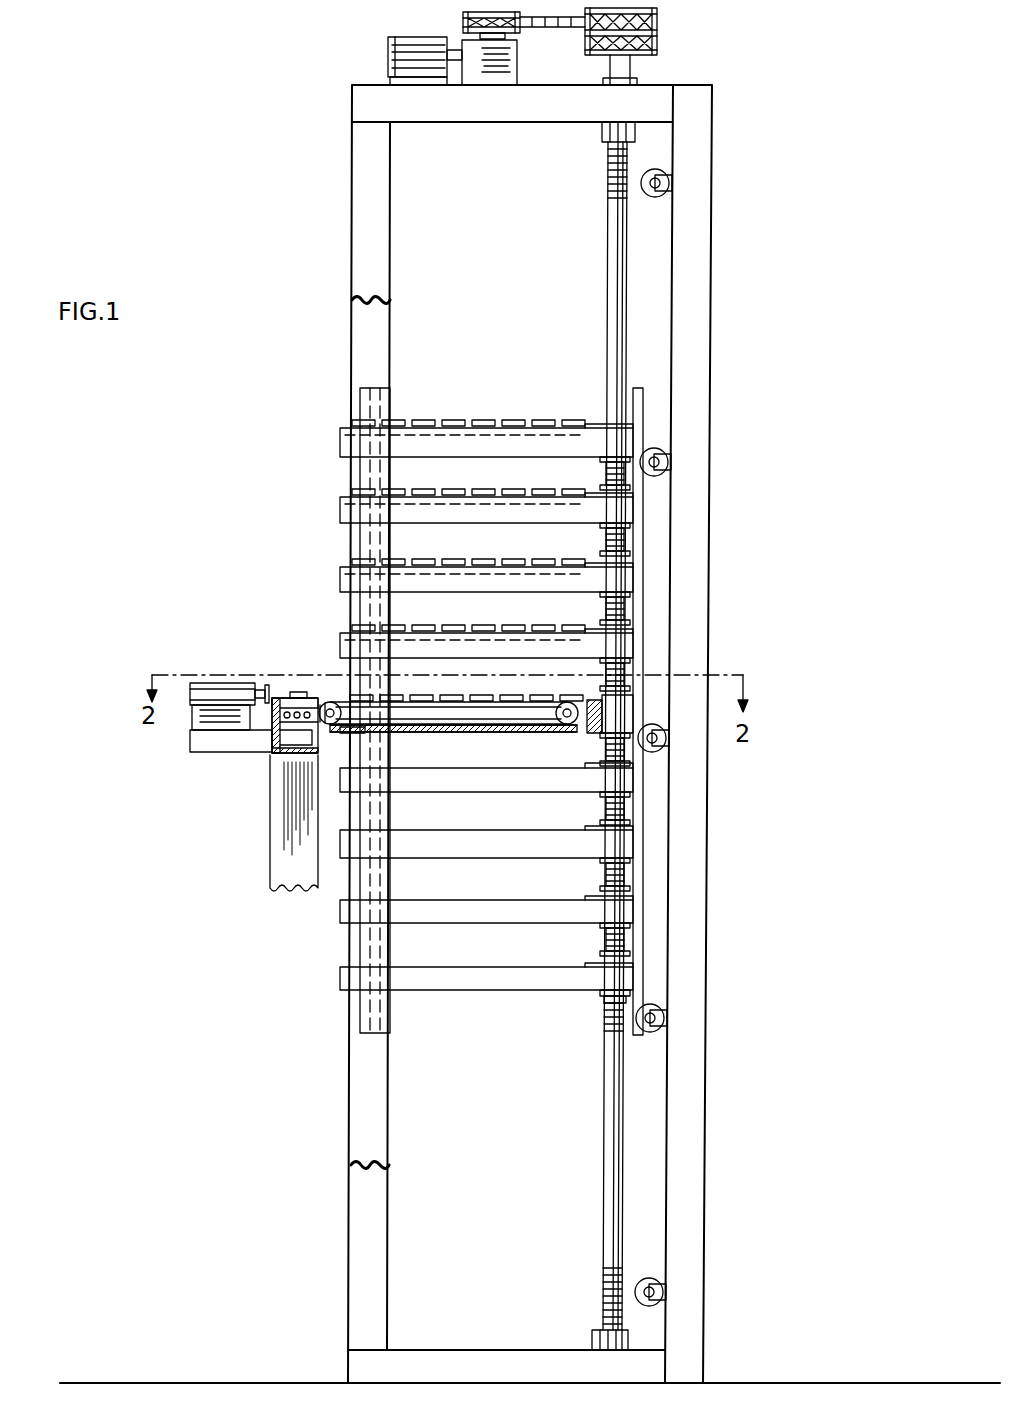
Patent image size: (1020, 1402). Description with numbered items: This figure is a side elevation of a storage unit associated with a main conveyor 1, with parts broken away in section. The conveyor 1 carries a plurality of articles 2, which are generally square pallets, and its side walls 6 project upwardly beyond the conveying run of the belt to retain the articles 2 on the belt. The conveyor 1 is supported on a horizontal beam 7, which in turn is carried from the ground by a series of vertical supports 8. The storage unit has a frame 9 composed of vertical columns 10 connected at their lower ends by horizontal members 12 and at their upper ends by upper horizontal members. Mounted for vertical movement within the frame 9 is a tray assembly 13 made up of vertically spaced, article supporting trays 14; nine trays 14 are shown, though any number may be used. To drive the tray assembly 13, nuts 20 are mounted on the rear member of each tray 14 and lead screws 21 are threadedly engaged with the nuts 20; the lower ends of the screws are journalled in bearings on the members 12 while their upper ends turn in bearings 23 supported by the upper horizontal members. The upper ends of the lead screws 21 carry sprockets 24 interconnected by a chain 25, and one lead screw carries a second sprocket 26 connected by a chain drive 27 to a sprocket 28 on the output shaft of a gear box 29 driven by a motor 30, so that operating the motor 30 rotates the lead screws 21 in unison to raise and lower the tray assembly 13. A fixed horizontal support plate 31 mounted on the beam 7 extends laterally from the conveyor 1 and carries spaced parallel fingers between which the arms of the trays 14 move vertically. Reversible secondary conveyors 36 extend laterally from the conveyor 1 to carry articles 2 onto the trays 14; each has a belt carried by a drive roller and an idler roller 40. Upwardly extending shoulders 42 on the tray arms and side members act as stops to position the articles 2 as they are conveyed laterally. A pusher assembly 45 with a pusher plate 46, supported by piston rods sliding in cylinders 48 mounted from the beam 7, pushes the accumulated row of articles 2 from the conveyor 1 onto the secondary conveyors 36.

The conveyor 1 is at (272, 730).
The articles 2 is at (512, 425).
The side walls 6 is at (277, 698).
The horizontal beam 7 is at (266, 756).
The vertical supports 8 is at (275, 876).
The frame 9 is at (712, 308).
The vertical columns 10 is at (362, 284).
The lower horizontal members 12 is at (492, 1360).
The tray assembly 13 is at (337, 523).
The trays 14 is at (583, 447).
The nuts 20 is at (603, 423).
The lead screws 21 is at (612, 250).
The bearings 23 is at (602, 128).
The sprockets 24 is at (655, 52).
The chain 25 is at (657, 40).
The second sprocket 26 is at (657, 14).
The chain drive 27 is at (540, 28).
The sprocket 28 is at (463, 20).
The gear box 29 is at (500, 68).
The motor 30 is at (392, 42).
The horizontal support plate 31 is at (410, 727).
The secondary conveyors 36 is at (490, 733).
The idler roller 40 is at (556, 720).
The shoulders 42 is at (583, 560).
The pusher assembly 45 is at (246, 688).
The pusher plate 46 is at (265, 698).
The cylinders 48 is at (207, 694).